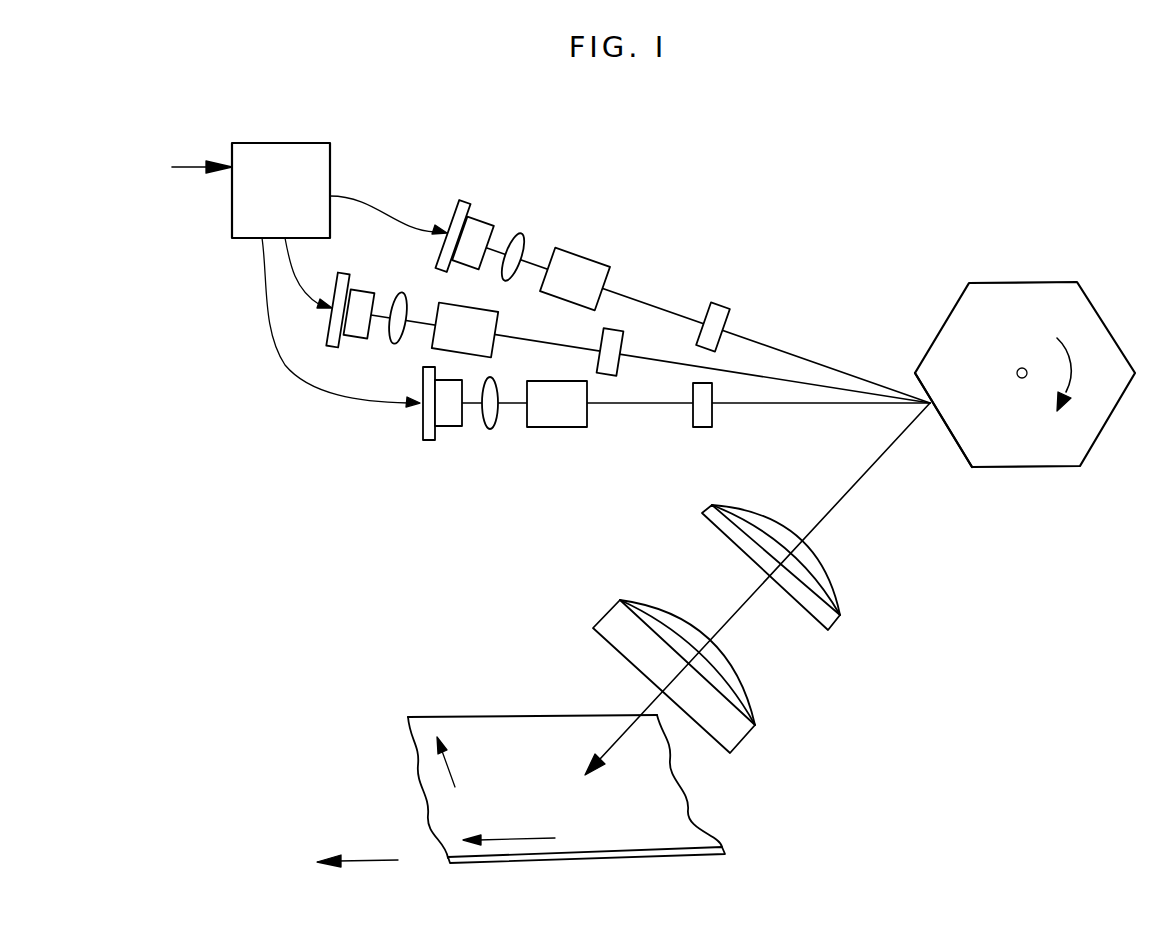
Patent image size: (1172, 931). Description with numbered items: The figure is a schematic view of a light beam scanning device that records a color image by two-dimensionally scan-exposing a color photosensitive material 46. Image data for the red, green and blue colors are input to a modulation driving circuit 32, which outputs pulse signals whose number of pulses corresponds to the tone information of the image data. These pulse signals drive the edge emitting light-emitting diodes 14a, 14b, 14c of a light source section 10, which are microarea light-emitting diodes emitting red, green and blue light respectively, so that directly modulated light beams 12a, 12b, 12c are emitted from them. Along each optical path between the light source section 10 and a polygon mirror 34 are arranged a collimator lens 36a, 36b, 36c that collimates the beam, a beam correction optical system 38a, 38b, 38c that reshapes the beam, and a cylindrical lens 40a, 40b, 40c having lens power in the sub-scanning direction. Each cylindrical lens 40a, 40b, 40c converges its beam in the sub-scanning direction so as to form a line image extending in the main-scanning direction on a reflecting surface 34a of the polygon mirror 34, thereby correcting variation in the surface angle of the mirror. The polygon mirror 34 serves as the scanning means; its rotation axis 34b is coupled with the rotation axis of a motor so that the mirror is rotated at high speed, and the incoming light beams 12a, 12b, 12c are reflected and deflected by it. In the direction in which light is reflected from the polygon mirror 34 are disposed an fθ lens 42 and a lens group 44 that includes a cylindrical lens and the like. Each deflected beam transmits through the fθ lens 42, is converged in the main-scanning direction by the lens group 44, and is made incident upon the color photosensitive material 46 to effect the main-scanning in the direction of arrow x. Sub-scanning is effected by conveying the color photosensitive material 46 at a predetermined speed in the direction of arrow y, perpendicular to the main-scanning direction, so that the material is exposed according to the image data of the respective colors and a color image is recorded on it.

The light source section 10 is at (506, 203).
The directly modulated light beam 12a is at (823, 365).
The directly modulated light beam 12b is at (790, 382).
The directly modulated light beam 12c is at (825, 405).
The edge emitting light-emitting diode 14a is at (457, 217).
The edge emitting light-emitting diode 14b is at (362, 295).
The edge emitting light-emitting diode 14c is at (443, 428).
The modulation driving circuit 32 is at (280, 150).
The polygon mirror 34 is at (985, 295).
The reflecting surface 34a is at (945, 425).
The rotation axis 34b is at (1025, 368).
The collimator lens 36a is at (525, 235).
The collimator lens 36b is at (390, 342).
The collimator lens 36c is at (490, 427).
The beam correction optical system 38a is at (580, 273).
The beam correction optical system 38b is at (492, 343).
The beam correction optical system 38c is at (558, 420).
The cylindrical lens 40a is at (717, 315).
The cylindrical lens 40b is at (619, 353).
The cylindrical lens 40c is at (703, 417).
The fθ lens 42 is at (840, 615).
The lens group 44 is at (753, 720).
The color photosensitive material 46 is at (520, 730).